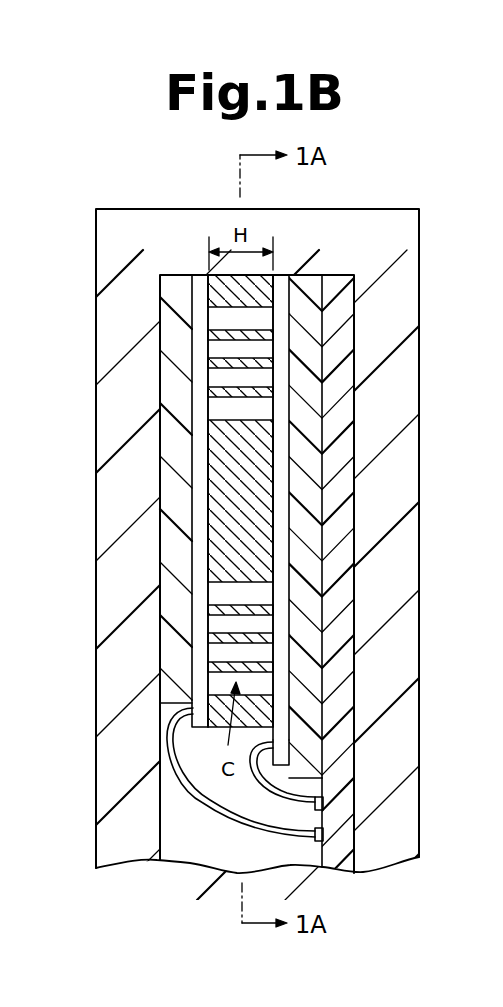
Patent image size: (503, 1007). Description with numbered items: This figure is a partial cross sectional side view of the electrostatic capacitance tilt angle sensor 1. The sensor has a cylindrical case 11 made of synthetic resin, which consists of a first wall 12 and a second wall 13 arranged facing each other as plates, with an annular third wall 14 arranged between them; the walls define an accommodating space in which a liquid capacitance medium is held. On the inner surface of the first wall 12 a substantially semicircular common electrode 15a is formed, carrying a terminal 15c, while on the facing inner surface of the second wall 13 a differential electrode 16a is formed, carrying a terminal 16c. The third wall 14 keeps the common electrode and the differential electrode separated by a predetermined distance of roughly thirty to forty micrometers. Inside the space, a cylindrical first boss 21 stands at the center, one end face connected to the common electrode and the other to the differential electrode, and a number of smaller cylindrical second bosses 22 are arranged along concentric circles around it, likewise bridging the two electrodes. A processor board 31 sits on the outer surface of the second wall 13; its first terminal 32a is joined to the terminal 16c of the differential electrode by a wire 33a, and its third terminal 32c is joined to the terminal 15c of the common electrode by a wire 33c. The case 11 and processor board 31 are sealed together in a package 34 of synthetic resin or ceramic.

The tilt angle sensor 1 is at (417, 185).
The case 11 is at (173, 272).
The first wall 12 is at (172, 641).
The second wall 13 is at (316, 539).
The third wall 14 is at (331, 276).
The common electrode 15a is at (198, 496).
The terminal 15c is at (198, 705).
The differential electrode 16a is at (283, 504).
The terminal 16c is at (283, 753).
The first boss 21 is at (263, 458).
The second bosses 22 is at (275, 393).
The processor board 31 is at (347, 864).
The first terminal 32a is at (324, 803).
The third terminal 32c is at (324, 835).
The wire 33a is at (261, 788).
The wire 33c is at (193, 790).
The package 34 is at (131, 856).